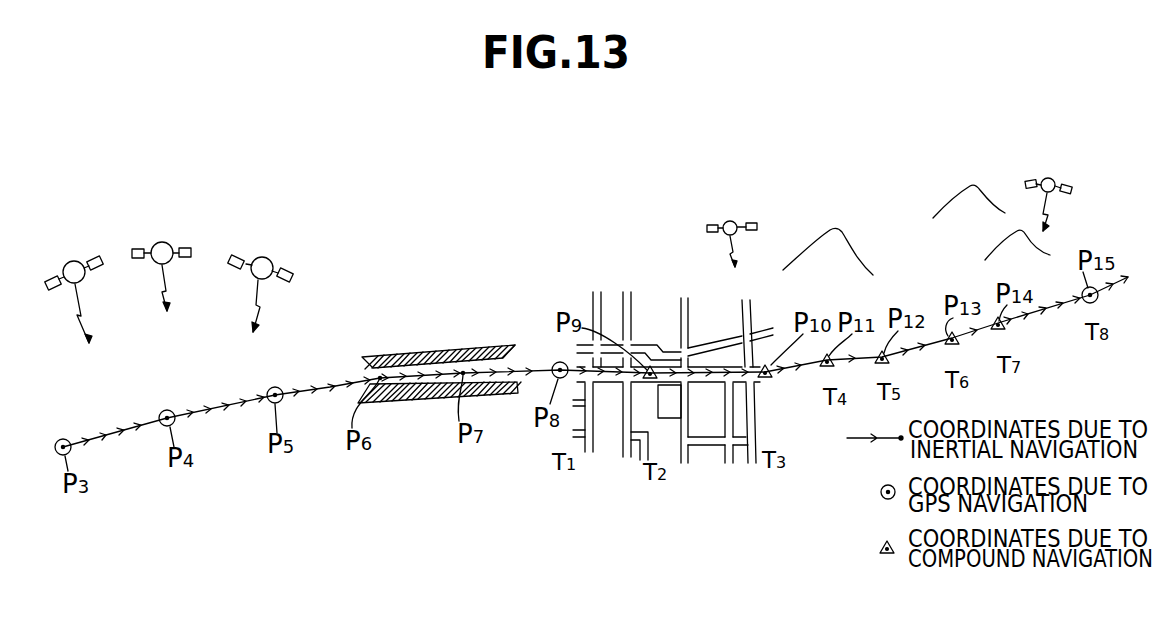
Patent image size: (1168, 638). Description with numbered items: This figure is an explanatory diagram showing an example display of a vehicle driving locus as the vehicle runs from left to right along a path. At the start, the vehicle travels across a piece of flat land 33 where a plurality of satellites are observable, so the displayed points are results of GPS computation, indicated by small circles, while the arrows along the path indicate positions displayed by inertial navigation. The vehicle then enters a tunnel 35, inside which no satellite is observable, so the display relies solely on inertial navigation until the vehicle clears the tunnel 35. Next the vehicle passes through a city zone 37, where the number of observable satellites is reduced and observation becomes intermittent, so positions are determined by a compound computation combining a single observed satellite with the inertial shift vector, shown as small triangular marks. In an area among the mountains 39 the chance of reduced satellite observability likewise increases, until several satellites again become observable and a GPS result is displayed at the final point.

The flat land 33 is at (103, 377).
The tunnel 35 is at (385, 344).
The city zone 37 is at (618, 281).
The mountains 39 is at (893, 264).